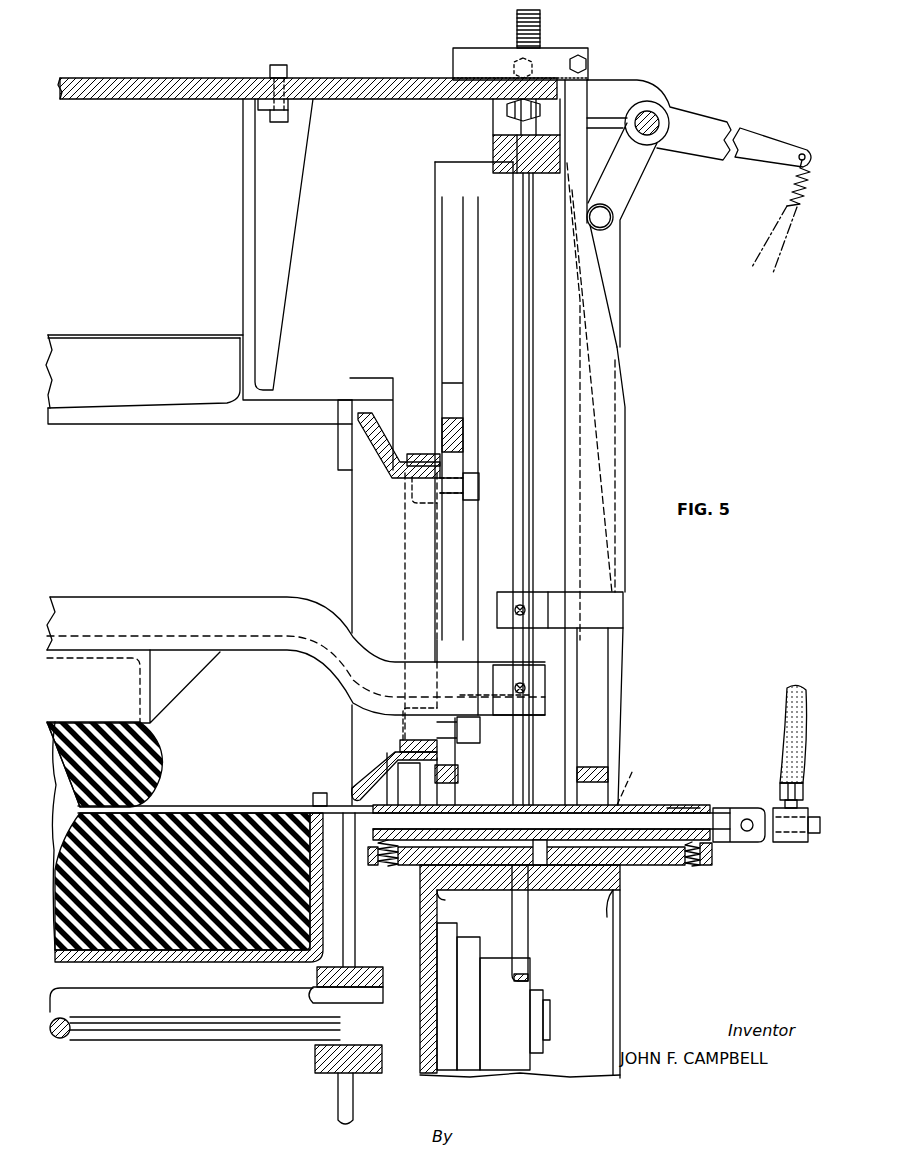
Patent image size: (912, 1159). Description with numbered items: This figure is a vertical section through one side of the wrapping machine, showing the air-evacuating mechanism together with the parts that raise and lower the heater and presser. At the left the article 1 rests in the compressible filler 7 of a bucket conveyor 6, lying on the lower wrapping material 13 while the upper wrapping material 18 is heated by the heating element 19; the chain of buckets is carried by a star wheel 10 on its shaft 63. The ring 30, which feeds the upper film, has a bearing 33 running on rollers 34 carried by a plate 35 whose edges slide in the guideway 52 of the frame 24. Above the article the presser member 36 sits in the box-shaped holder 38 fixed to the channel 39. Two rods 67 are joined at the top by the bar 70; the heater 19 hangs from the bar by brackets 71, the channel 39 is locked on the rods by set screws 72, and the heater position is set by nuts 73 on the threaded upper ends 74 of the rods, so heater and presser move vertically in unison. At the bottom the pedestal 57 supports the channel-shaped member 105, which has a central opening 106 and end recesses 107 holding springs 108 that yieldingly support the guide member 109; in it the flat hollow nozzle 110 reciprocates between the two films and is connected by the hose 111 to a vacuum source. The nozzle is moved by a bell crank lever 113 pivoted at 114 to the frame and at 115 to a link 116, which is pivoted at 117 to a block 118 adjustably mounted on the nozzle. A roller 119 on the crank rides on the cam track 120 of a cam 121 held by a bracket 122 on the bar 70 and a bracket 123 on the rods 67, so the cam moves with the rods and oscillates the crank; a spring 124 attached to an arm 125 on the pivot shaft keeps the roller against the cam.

The article 1 is at (55, 843).
The bucket conveyor 6 is at (55, 957).
The replaceable filler 7 is at (57, 905).
The star wheel 10 is at (340, 1097).
The wrapping material 13 is at (60, 822).
The wrapping material 18 is at (60, 770).
The heating element 19 is at (170, 340).
The frame 24 is at (438, 172).
The annular ring 30 is at (340, 448).
The bearing 33 is at (420, 454).
The rollers 34 is at (405, 505).
The plate 35 is at (465, 440).
The presser member 36 is at (165, 757).
The holder 38 is at (178, 686).
The channel 39 is at (235, 598).
The guideway 52 is at (445, 283).
The pedestal 57 is at (614, 912).
The shaft 63 is at (103, 1018).
The rods 67 is at (523, 197).
The bar 70 is at (322, 88).
The brackets 71 is at (290, 217).
The set screws 72 is at (527, 688).
The adjusting and locking nuts 73 is at (545, 62).
The upper thread ends 74 is at (517, 26).
The channel-shaped member 105 is at (645, 862).
The central opening 106 is at (545, 870).
The recesses 107 is at (383, 866).
The springs 108 is at (393, 868).
The guide member 109 is at (643, 805).
The nozzle 110 is at (693, 822).
The hose 111 is at (785, 690).
The bell crank lever 113 is at (632, 178).
The pivot 114 is at (655, 115).
The pivot 115 is at (630, 770).
The link 116 is at (667, 808).
The pivot 117 is at (743, 810).
The block 118 is at (750, 819).
The roller 119 is at (613, 224).
The cam track 120 is at (605, 276).
The cam 121 is at (603, 353).
The bracket 122 is at (470, 55).
The bracket 123 is at (628, 608).
The spring 124 is at (783, 185).
The arm 125 is at (750, 133).